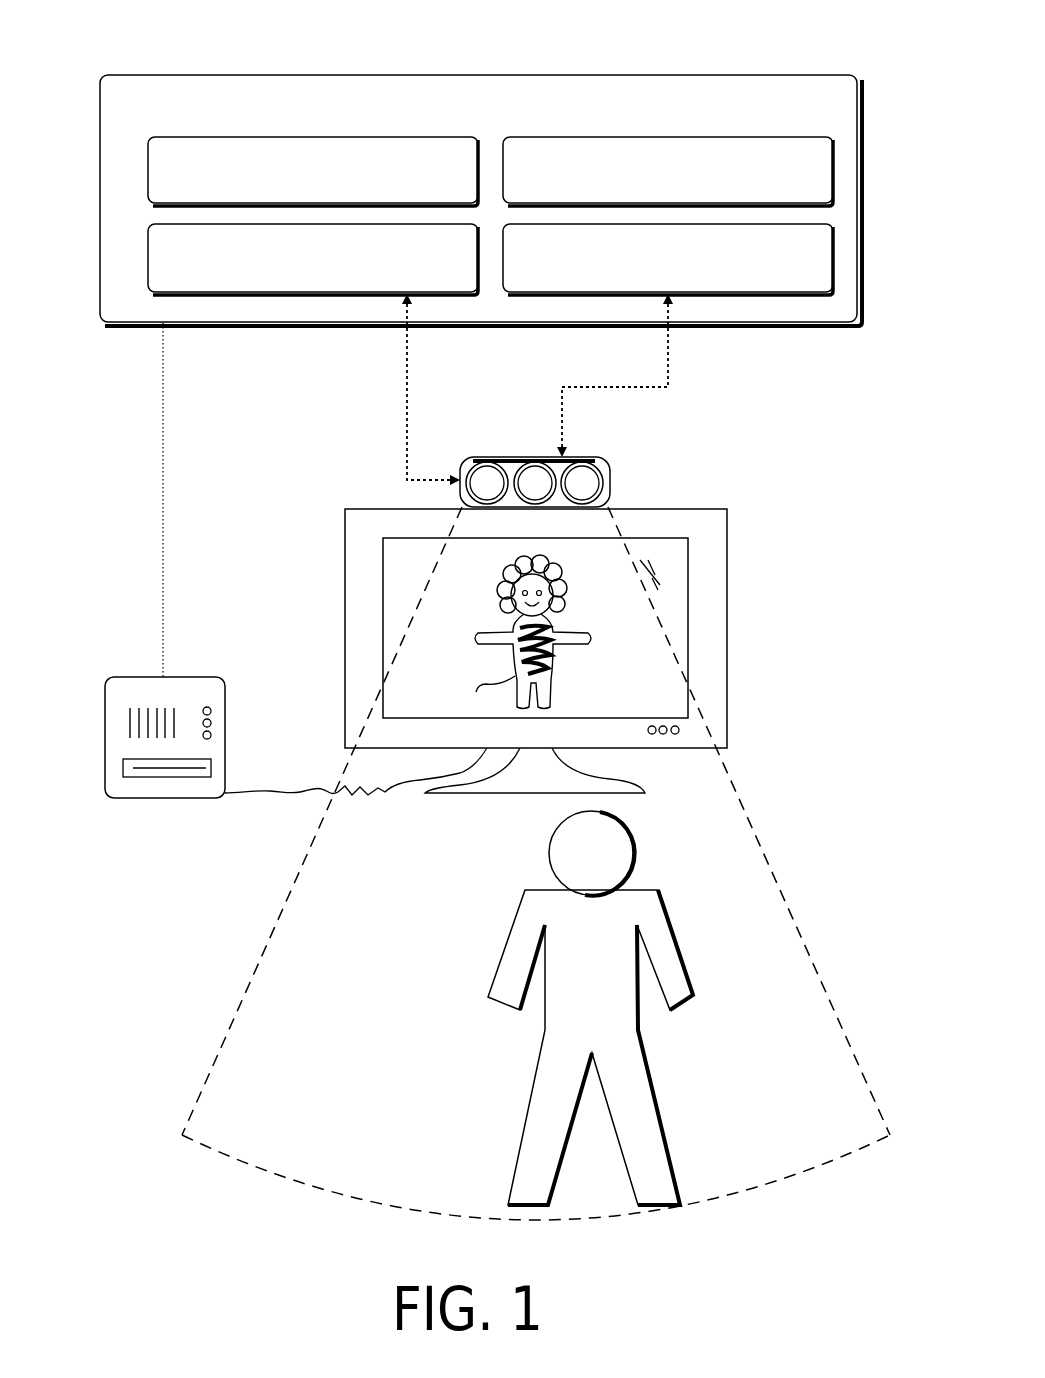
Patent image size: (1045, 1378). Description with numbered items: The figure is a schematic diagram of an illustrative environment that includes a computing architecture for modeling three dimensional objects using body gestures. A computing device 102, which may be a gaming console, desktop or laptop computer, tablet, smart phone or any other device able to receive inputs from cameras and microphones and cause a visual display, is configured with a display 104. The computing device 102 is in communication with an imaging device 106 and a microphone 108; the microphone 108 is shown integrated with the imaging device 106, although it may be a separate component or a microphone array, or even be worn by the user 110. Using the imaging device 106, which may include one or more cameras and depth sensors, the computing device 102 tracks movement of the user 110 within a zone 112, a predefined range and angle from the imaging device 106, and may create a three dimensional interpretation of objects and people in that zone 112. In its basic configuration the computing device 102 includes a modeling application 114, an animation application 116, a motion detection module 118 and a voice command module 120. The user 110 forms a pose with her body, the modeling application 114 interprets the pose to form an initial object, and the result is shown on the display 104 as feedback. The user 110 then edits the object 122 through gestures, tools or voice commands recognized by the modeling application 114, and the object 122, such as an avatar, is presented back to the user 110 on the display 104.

The computing device 102 is at (103, 847).
The display 104 is at (727, 652).
The imaging device 106 is at (610, 472).
The microphone 108 is at (605, 453).
The user 110 is at (540, 1072).
The zone 112 is at (235, 1012).
The modeling application 114 is at (313, 171).
The animation application 116 is at (668, 171).
The motion detection module 118 is at (313, 259).
The voice command module 120 is at (668, 259).
The object 122 is at (600, 615).